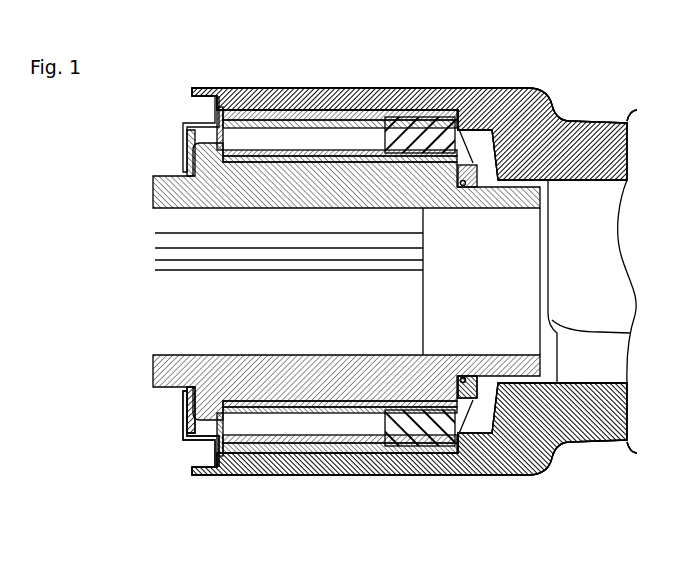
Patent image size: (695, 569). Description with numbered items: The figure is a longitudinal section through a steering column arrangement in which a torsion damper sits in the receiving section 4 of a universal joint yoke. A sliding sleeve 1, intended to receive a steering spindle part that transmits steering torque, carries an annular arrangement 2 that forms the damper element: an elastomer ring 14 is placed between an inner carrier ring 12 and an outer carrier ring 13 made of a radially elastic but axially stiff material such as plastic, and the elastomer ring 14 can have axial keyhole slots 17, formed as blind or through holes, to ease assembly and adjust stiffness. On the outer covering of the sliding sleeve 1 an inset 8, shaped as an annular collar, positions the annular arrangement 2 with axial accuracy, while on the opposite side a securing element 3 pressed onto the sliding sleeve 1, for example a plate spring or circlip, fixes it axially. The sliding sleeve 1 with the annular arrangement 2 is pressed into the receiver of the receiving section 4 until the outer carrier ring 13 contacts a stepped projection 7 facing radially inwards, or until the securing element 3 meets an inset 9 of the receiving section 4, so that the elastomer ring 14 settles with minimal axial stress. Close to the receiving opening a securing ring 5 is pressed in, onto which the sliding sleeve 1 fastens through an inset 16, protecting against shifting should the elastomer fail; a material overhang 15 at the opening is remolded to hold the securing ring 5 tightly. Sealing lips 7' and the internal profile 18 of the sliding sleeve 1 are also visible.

The sliding sleeve 1 is at (170, 388).
The annular arrangement 2 is at (335, 453).
The securing element 3 is at (457, 370).
The receiving section 4 is at (405, 477).
The securing ring 5 is at (190, 457).
The stepped projection 7 is at (414, 452).
The sealing lip 7' is at (325, 322).
The inset 8 is at (223, 397).
The inset 9 is at (490, 428).
The inner carrier ring 12 is at (400, 110).
The outer carrier ring 13 is at (314, 88).
The elastomer ring 14 is at (443, 92).
The material overhang 15 is at (203, 474).
The inset 16 is at (197, 400).
The keyhole slots 17 is at (307, 423).
The splines 18 is at (413, 247).